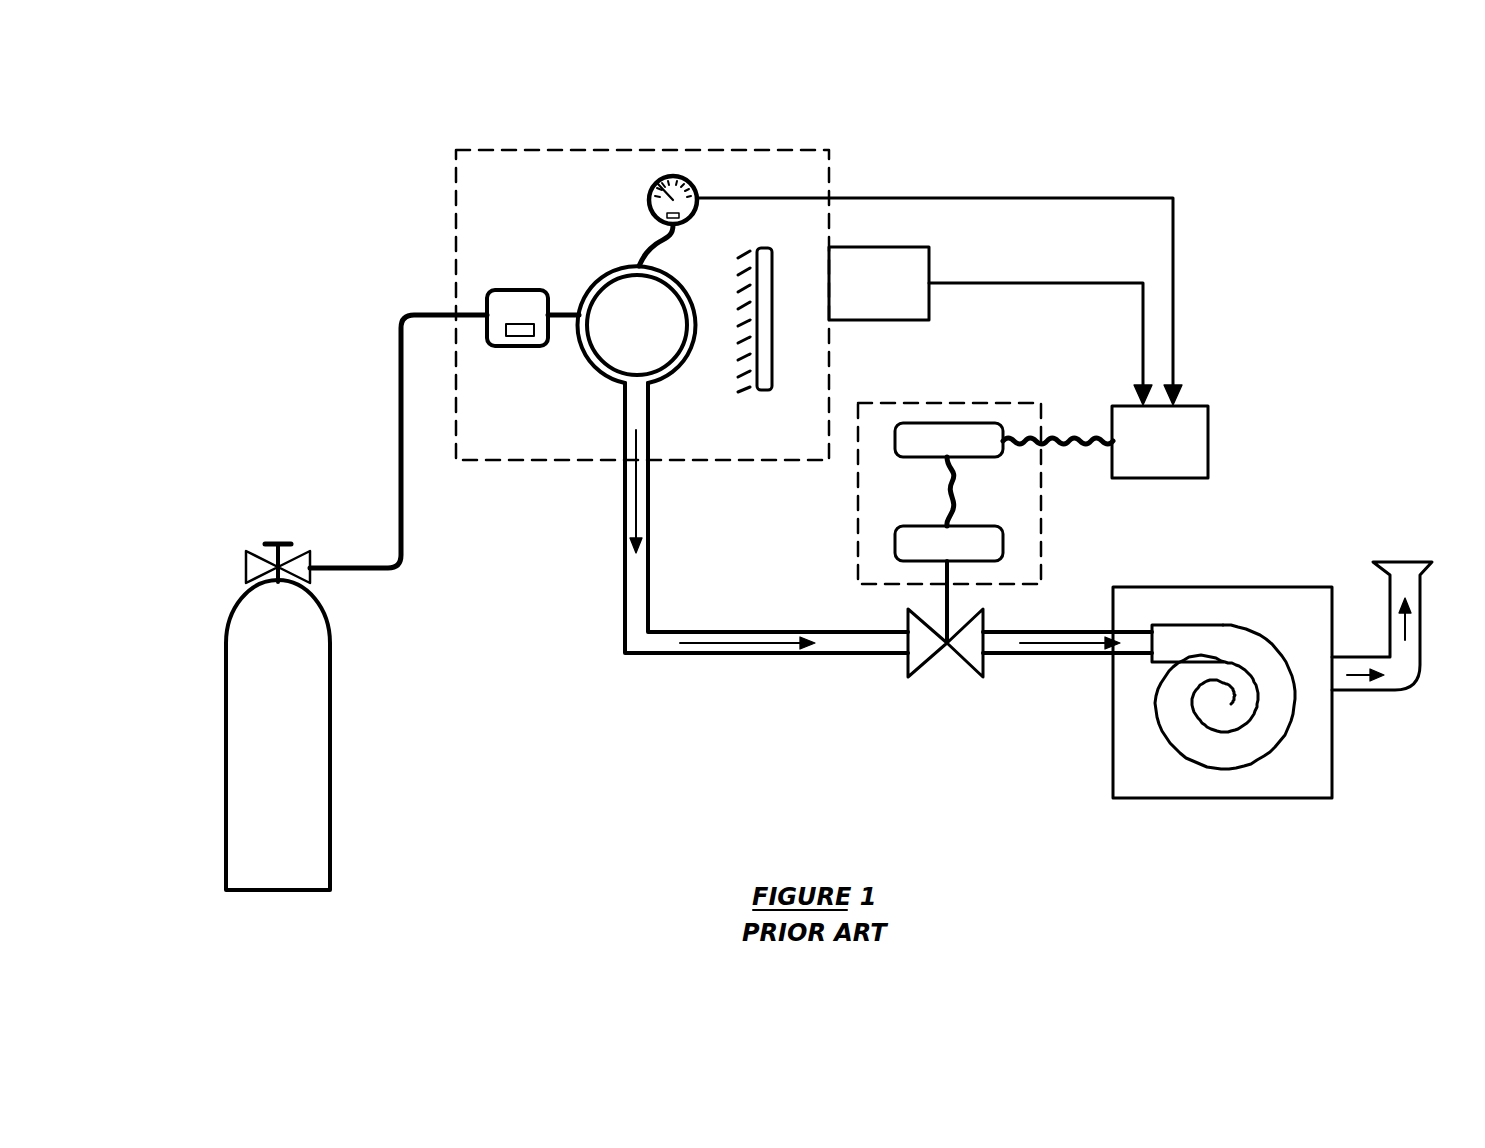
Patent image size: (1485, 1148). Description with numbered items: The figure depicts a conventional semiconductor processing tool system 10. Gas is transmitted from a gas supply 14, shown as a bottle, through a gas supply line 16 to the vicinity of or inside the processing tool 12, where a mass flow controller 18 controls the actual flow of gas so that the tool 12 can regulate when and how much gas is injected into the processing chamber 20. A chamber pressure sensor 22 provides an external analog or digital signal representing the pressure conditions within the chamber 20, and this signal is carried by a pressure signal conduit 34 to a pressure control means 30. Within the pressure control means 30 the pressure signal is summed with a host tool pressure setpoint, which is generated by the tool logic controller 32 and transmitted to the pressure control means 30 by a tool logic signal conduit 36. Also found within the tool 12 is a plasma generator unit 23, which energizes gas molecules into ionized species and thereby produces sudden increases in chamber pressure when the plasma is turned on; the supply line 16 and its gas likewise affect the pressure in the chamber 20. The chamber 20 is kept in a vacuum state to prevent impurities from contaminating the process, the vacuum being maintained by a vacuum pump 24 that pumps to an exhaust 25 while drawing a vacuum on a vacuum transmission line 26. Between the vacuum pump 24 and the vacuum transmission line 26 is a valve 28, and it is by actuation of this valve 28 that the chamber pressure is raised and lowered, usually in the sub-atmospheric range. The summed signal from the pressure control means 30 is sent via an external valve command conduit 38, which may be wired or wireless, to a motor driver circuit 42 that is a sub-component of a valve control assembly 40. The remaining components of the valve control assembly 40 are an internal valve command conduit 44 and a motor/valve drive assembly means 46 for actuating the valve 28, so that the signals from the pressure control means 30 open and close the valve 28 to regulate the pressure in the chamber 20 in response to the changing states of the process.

The semiconductor processing tool system 10 is at (398, 192).
The processing tool 12 is at (832, 146).
The gas supply 14 is at (330, 740).
The gas supply line 16 is at (400, 375).
The mass flow controller 18 is at (518, 290).
The processing chamber 20 is at (604, 275).
The chamber pressure sensor 22 is at (673, 175).
The plasma generator unit 23 is at (772, 368).
The vacuum pump 24 is at (1213, 799).
The exhaust 25 is at (1388, 583).
The vacuum transmission line 26 is at (623, 613).
The valve 28 is at (938, 680).
The pressure control means 30 is at (1208, 440).
The tool logic controller 32 is at (877, 247).
The pressure signal conduit 34 is at (1092, 197).
The tool logic signal conduit 36 is at (976, 283).
The external valve command conduit 38 is at (1063, 447).
The valve control assembly 40 is at (1041, 503).
The motor driver circuit 42 is at (950, 423).
The internal valve command conduit 44 is at (943, 490).
The motor/valve drive assembly means 46 is at (895, 541).